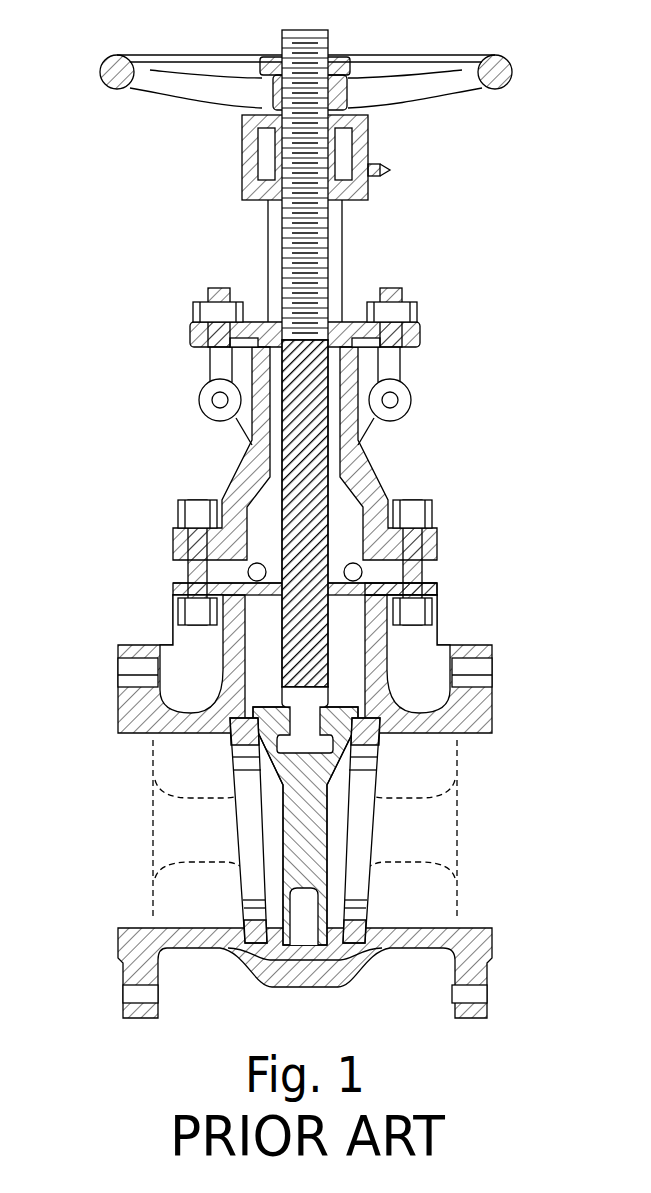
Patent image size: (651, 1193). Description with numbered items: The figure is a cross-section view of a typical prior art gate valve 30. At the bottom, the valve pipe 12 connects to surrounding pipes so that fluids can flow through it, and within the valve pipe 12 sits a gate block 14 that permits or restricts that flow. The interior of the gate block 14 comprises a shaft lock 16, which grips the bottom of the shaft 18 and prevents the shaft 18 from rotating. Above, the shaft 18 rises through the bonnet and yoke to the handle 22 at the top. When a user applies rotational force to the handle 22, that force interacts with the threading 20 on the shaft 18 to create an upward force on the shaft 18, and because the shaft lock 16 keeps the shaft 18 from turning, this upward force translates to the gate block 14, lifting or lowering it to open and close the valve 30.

The prior art gate valve 30 is at (309, 519).
The handle 22 is at (503, 88).
The threading 20 is at (329, 208).
The shaft 18 is at (303, 510).
The shaft lock 16 is at (440, 648).
The valve pipe 12 is at (155, 740).
The gate block 14 is at (252, 878).